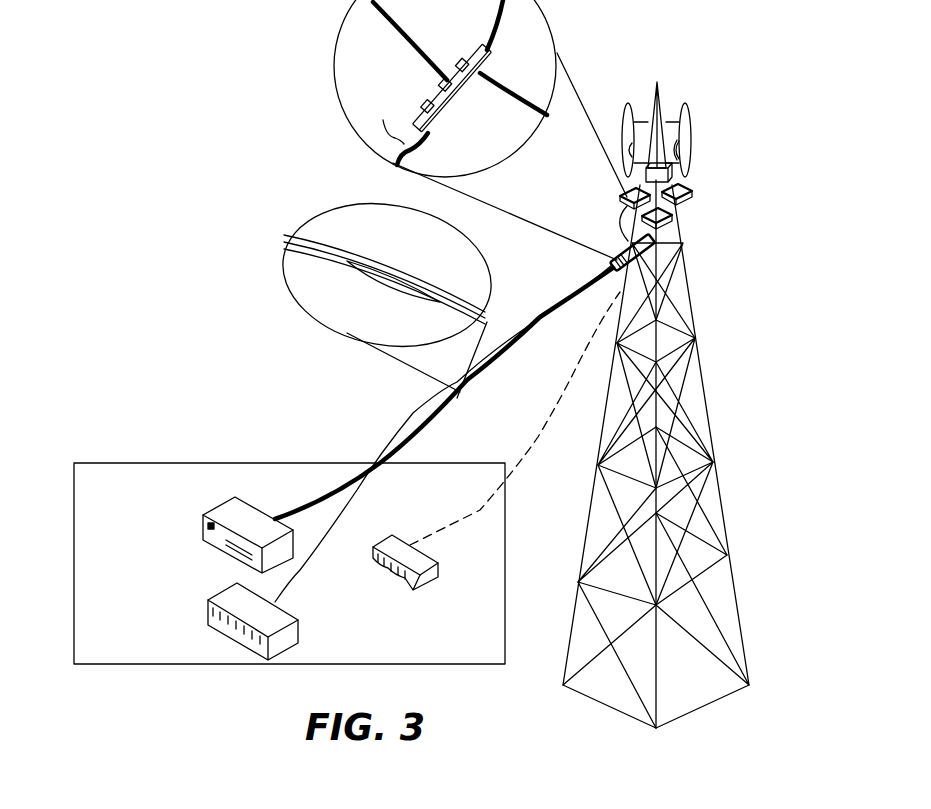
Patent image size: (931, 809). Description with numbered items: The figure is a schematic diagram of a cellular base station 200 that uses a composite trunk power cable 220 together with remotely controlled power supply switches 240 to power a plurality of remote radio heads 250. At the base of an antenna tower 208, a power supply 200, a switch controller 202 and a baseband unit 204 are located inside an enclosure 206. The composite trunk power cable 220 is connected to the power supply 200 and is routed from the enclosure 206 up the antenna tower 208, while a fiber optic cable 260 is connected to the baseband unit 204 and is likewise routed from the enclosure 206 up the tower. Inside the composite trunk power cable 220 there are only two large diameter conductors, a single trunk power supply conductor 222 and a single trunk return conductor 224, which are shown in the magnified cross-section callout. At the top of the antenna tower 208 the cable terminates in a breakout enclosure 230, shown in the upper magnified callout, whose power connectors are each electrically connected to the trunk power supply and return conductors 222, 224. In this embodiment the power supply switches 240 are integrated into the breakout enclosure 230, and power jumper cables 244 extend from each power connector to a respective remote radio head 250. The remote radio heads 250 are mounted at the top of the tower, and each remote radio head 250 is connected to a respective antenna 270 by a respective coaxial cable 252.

The cellular base station / power supply 200 is at (178, 345).
The switch controller 202 is at (492, 471).
The baseband unit 204 is at (202, 615).
The enclosure 206 is at (205, 462).
The antenna tower 208 is at (720, 493).
The composite trunk power cable 220 is at (313, 502).
The trunk power supply conductor 222 is at (320, 252).
The trunk return conductor 224 is at (357, 258).
The breakout enclosure 230 is at (442, 108).
The remotely controlled power supply switches 240 is at (478, 49).
The power jumper cables 244 is at (403, 40).
The remote radio heads 250 is at (693, 197).
The coaxial cable 252 is at (689, 151).
The fiber optic cable 260 is at (320, 565).
The antenna 270 is at (628, 104).